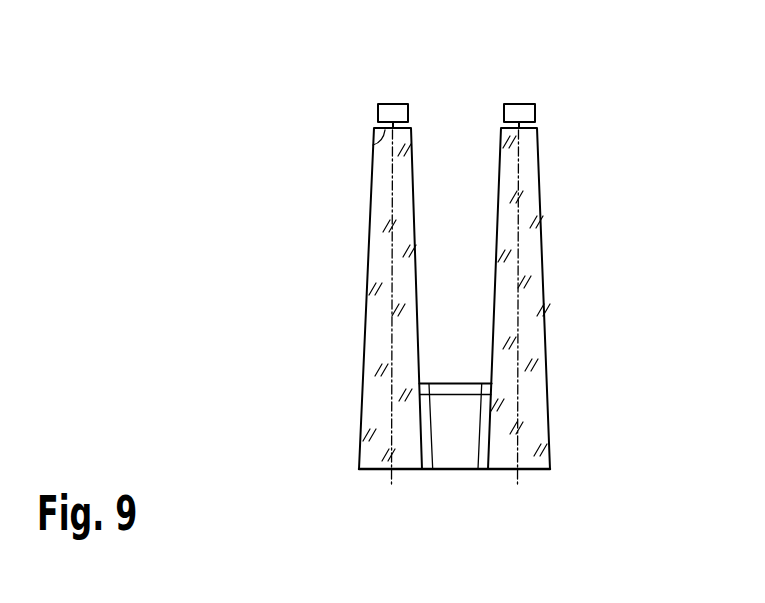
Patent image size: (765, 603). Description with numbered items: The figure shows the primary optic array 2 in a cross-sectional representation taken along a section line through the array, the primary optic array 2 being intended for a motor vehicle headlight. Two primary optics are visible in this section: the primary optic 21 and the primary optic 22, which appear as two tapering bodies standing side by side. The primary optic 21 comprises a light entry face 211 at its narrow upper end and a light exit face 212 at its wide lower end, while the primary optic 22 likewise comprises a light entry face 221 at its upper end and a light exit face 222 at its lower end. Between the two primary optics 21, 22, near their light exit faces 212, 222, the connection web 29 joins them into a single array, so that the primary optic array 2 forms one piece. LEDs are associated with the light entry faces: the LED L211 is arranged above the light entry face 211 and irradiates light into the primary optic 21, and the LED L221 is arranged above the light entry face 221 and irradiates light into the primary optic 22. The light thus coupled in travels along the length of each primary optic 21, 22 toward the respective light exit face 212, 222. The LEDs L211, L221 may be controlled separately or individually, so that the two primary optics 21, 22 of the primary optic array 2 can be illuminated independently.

The primary optic array 2 is at (486, 291).
The primary optic 21 is at (382, 262).
The primary optic 22 is at (528, 262).
The light entry face 211 is at (373, 145).
The light exit face 212 is at (371, 470).
The light entry face 221 is at (526, 130).
The light exit face 222 is at (530, 470).
The LED L211 is at (393, 112).
The LED L221 is at (523, 112).
The connection web 29 is at (453, 444).